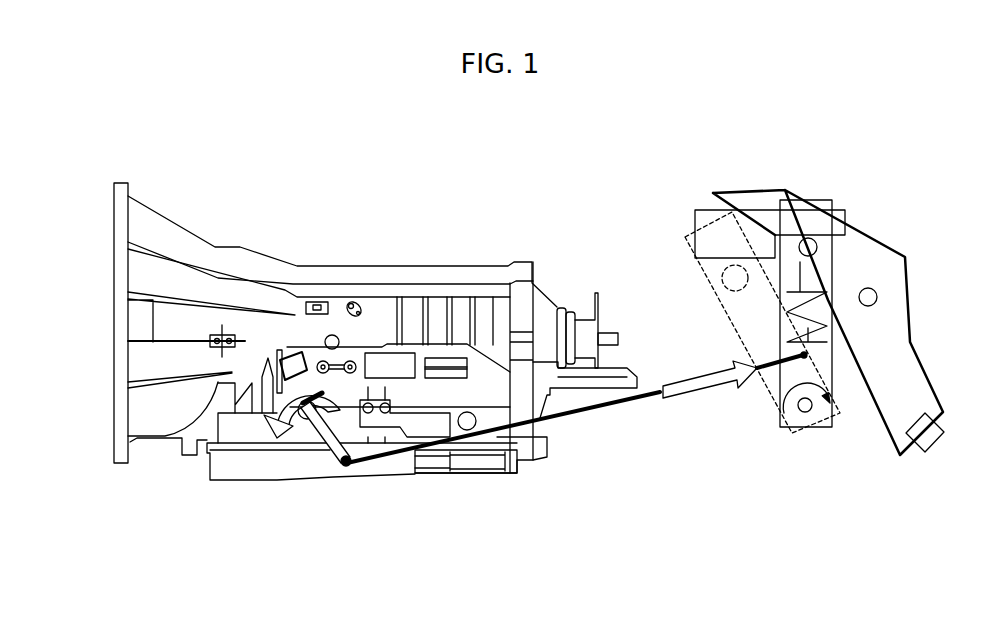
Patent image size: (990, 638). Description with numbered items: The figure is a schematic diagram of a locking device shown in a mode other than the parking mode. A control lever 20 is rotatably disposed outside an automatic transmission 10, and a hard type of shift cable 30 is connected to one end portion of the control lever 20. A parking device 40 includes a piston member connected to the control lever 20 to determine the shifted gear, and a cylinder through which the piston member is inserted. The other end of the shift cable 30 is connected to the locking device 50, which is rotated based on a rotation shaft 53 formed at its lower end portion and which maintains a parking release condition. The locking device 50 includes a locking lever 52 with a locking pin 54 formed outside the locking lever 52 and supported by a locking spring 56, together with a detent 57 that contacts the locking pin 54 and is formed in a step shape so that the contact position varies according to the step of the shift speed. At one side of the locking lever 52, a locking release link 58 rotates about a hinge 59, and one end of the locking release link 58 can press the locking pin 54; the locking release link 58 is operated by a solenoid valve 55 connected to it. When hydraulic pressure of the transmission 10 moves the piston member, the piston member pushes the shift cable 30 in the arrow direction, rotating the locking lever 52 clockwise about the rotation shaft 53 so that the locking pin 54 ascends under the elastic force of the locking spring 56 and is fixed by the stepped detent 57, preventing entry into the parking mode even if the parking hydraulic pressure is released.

The automatic transmission 10 is at (340, 270).
The control lever 20 is at (334, 458).
The shift cable 30 is at (606, 406).
The parking device 40 is at (410, 473).
The locking device 50 is at (803, 309).
The locking lever 52 is at (834, 380).
The rotation shaft 53 is at (806, 413).
The locking pin 54 is at (810, 238).
The solenoid valve 55 is at (925, 457).
The locking spring 56 is at (818, 263).
The detent 57 is at (693, 212).
The locking release link 58 is at (898, 248).
The hinge 59 is at (878, 296).